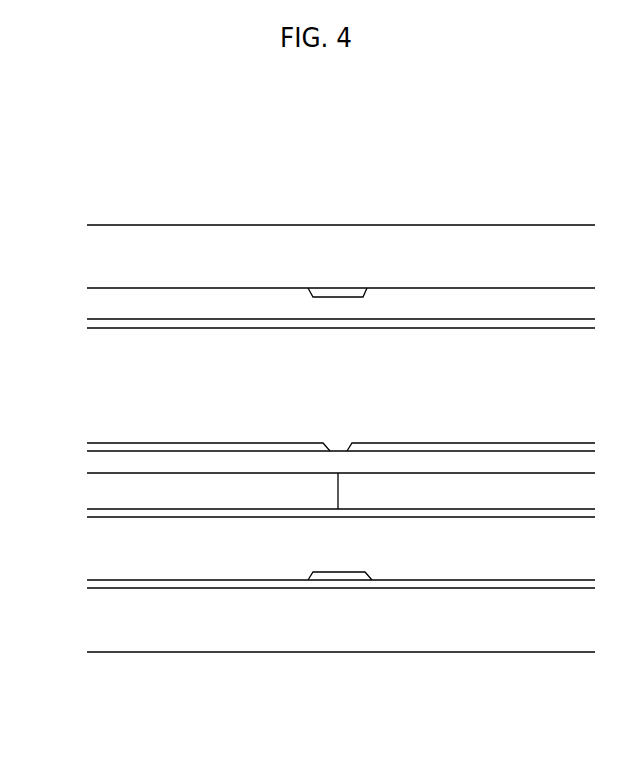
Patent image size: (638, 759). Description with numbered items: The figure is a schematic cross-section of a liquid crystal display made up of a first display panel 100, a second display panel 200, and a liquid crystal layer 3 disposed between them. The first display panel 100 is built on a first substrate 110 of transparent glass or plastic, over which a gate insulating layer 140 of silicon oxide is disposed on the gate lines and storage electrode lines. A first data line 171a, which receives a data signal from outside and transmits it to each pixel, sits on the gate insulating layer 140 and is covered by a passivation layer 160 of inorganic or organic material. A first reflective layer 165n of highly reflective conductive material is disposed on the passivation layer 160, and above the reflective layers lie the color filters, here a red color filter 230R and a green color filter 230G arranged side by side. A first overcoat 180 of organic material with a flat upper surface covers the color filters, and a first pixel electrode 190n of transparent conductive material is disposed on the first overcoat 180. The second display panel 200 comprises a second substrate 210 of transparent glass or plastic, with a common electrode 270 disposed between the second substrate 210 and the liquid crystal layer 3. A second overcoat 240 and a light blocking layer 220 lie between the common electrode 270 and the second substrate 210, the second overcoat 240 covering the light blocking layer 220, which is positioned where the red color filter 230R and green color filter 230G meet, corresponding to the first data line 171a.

The second display panel 200 is at (73, 227).
The second substrate 210 is at (403, 238).
The light blocking layer 220 is at (335, 293).
The second overcoat 240 is at (223, 302).
The common electrode 270 is at (515, 323).
The liquid crystal layer 3 is at (73, 330).
The first display panel 100 is at (73, 445).
The first pixel electrode 190n is at (231, 448).
The first overcoat 180 is at (338, 458).
The red color filter 230R is at (212, 491).
The green color filter 230G is at (466, 495).
The first reflective layer 165n is at (190, 517).
The passivation layer 160 is at (453, 565).
The first data line 171a is at (352, 577).
The gate insulating layer 140 is at (320, 588).
The first substrate 110 is at (259, 645).